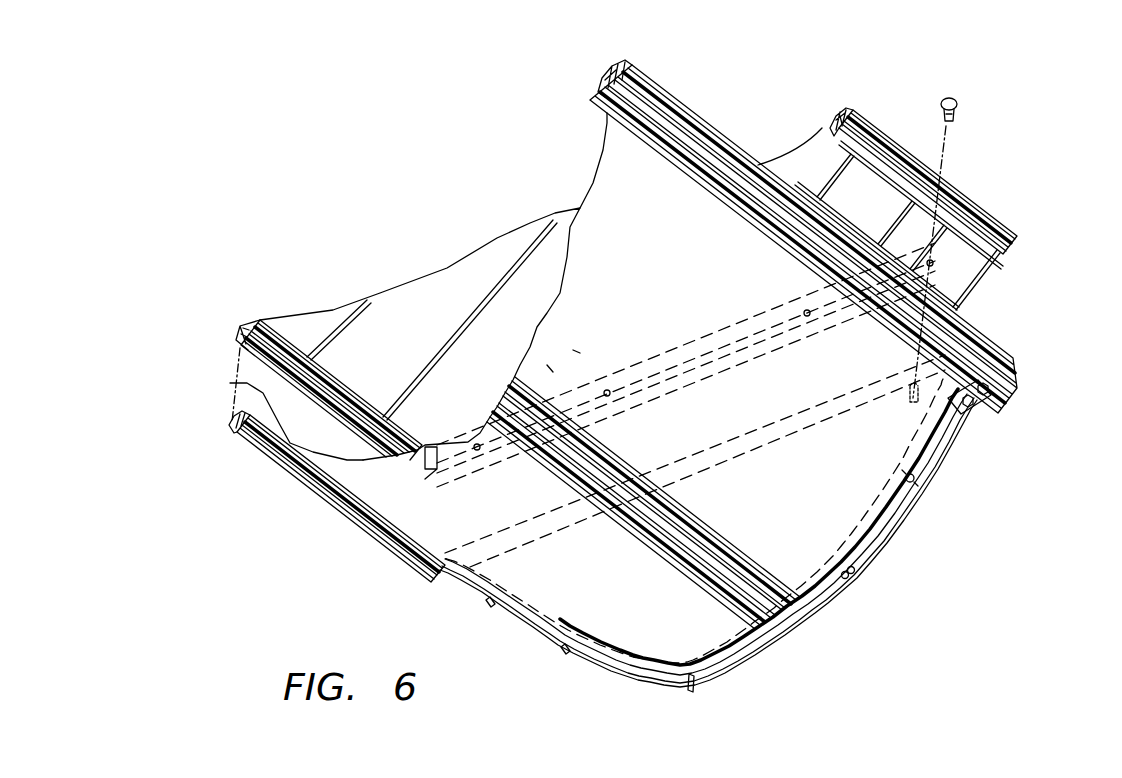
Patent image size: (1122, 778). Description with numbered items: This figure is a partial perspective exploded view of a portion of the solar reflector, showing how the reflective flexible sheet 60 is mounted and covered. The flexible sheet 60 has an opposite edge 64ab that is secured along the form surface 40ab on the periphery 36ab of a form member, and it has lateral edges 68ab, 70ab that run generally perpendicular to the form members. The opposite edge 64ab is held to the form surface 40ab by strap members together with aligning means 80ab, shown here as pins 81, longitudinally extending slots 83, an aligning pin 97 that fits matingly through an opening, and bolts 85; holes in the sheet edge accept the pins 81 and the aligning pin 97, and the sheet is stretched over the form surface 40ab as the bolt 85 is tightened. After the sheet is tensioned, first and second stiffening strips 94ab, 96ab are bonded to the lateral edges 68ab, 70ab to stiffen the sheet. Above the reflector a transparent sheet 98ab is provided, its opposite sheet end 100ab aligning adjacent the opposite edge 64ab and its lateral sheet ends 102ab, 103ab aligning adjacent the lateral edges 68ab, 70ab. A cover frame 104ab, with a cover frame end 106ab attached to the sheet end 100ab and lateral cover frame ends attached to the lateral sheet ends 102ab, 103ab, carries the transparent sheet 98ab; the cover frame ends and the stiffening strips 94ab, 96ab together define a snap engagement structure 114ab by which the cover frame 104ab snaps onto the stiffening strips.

The periphery 36ab is at (880, 565).
The form surface 40ab is at (857, 590).
The flexible sheet 60 is at (390, 494).
The opposite edge 64ab is at (867, 518).
The lateral edge 68ab is at (230, 383).
The lateral edge 70ab is at (607, 121).
The aligning means 80ab is at (995, 507).
The pin 81 is at (916, 479).
The longitudinally extending slot 83 is at (914, 483).
The bolt 85 is at (982, 410).
The first stiffening strip 94ab is at (248, 446).
The second stiffening strip 96ab is at (672, 88).
The aligning pin 97 is at (690, 684).
The transparent sheet 98ab is at (447, 267).
The opposite sheet end 100ab is at (947, 240).
The lateral sheet end 102ab is at (263, 320).
The lateral sheet end 103ab is at (826, 126).
The cover frame 104ab is at (880, 120).
The cover frame end 106ab is at (985, 270).
The snap engagement structure 114ab is at (613, 67).